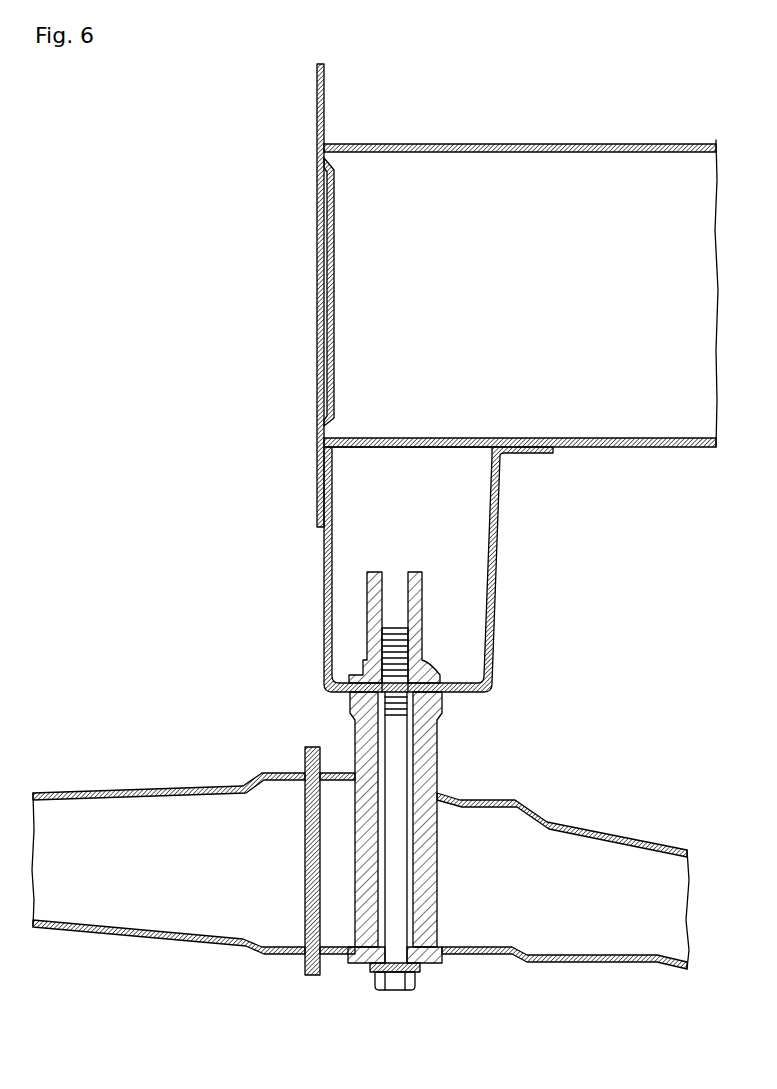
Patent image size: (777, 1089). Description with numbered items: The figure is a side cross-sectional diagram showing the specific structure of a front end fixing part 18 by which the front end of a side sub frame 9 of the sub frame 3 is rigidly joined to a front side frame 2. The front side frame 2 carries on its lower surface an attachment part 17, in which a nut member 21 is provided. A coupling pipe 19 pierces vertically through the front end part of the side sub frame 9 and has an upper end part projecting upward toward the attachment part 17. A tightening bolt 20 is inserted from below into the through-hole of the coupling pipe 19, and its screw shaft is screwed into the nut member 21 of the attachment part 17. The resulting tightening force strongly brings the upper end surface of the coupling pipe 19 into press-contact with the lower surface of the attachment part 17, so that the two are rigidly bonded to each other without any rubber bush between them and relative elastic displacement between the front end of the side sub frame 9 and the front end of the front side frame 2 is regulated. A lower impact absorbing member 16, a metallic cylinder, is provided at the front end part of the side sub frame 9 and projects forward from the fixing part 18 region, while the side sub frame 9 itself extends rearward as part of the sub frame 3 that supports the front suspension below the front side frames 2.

The front side frame 2 is at (568, 135).
The sub frame 3 is at (574, 855).
The side sub frame 9 is at (573, 826).
The lower impact absorbing member 16 is at (120, 785).
The attachment part 17 is at (498, 540).
The front end fixing part 18 is at (442, 745).
The coupling pipe 19 is at (353, 745).
The tightening bolt 20 is at (397, 992).
The nut member 21 is at (368, 626).